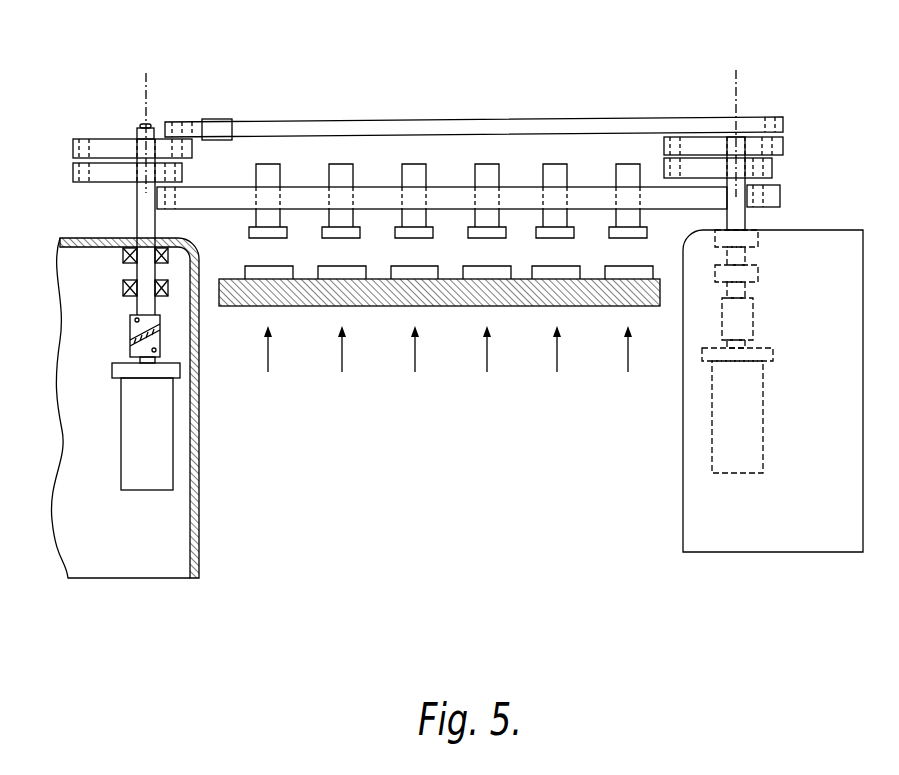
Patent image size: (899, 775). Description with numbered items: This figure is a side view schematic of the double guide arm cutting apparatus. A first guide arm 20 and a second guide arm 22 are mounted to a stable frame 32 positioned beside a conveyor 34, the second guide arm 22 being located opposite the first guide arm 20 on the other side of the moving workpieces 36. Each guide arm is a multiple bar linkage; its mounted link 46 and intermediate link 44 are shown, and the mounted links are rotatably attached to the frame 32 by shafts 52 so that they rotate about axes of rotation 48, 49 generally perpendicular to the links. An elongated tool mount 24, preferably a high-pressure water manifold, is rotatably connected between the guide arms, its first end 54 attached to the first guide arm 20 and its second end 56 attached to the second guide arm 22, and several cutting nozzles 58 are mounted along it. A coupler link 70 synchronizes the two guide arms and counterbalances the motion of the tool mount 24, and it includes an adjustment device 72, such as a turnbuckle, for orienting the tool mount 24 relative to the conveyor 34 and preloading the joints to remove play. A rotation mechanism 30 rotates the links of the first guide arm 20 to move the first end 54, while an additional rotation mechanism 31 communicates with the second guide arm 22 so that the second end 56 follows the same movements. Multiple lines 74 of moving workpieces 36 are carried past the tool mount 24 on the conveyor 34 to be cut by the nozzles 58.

The guide arm 20 is at (112, 142).
The second guide arm 22 is at (796, 138).
The tool mount 24 is at (391, 197).
The rotation mechanism 30 is at (143, 560).
The additional rotation mechanism 31 is at (704, 412).
The frame 32 is at (193, 475).
The conveyor 34 is at (530, 306).
The moving workpiece 36 is at (332, 273).
The intermediate link 44 is at (73, 175).
The mounted link 46 is at (73, 150).
The axis of rotation 48 is at (141, 82).
The axis of rotation 49 is at (735, 80).
The shaft 52 is at (137, 228).
The first end 54 is at (185, 210).
The second end 56 is at (780, 193).
The cutting nozzle 58 is at (285, 236).
The coupler link 70 is at (447, 128).
The adjustment device 72 is at (215, 119).
The line 74 is at (448, 364).